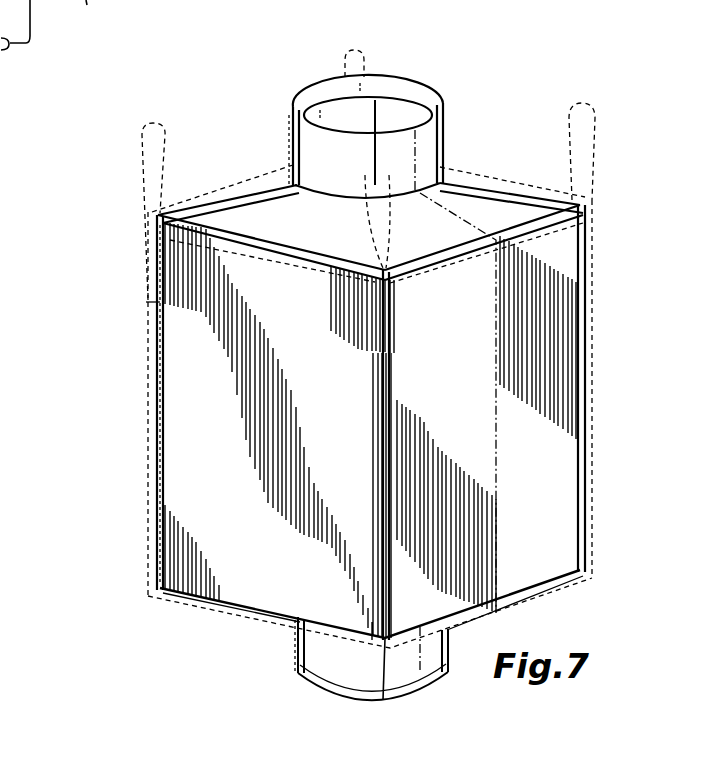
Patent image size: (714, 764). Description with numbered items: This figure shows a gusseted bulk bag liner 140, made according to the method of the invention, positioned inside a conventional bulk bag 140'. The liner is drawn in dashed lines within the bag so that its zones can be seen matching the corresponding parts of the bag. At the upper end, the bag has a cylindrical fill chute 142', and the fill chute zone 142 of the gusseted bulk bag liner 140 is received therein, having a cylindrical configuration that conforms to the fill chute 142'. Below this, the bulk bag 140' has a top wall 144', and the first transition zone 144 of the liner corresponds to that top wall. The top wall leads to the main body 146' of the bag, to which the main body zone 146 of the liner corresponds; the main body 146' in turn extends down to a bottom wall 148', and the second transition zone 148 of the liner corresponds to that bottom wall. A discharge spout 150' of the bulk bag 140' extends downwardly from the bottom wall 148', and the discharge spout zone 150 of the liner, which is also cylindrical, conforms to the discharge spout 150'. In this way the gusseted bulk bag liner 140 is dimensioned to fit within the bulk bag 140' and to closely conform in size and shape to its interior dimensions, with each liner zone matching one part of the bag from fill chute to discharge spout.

The gusseted bulk bag liner 140 is at (326, 345).
The bulk bag 140' is at (312, 402).
The fill chute zone 142 is at (381, 104).
The fill chute 142' is at (229, 124).
The first transition zone 144 is at (370, 196).
The top wall 144' is at (368, 159).
The main body zone 146 is at (529, 424).
The main body 146' is at (132, 405).
The second transition zone 148 is at (399, 604).
The bottom wall 148' is at (356, 646).
The discharge spout zone 150 is at (366, 674).
The discharge spout 150' is at (302, 652).